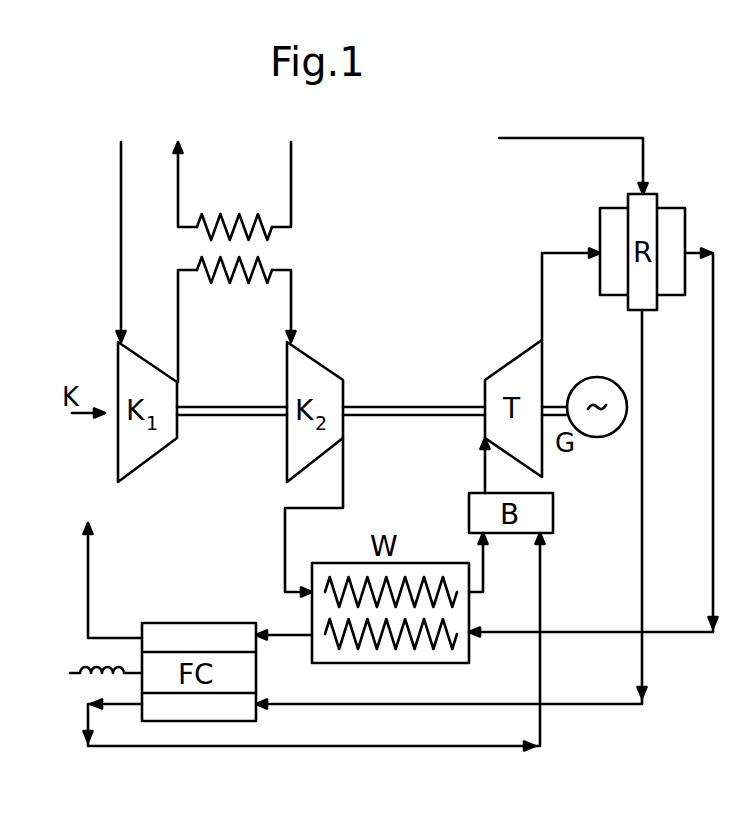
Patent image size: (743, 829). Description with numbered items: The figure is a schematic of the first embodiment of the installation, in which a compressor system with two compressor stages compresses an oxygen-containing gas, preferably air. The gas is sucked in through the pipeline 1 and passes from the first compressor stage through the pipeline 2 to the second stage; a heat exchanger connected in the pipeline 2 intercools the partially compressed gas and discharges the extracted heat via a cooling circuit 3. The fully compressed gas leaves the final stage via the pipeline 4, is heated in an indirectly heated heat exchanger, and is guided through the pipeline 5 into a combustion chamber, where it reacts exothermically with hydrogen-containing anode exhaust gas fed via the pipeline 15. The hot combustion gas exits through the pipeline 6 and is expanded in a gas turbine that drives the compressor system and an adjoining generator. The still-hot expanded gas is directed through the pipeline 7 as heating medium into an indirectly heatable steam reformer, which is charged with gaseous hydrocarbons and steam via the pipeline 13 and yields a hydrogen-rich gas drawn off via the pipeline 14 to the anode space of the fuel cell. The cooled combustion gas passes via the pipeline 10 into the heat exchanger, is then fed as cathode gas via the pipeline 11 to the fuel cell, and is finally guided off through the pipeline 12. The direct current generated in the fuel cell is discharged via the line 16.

The pipeline 1 is at (113, 242).
The pipeline 2 is at (237, 319).
The cooling circuit 3 is at (244, 191).
The pipeline 4 is at (302, 517).
The pipeline 5 is at (488, 566).
The pipeline 6 is at (475, 467).
The pipeline 7 is at (558, 295).
The pipeline 10 is at (595, 443).
The pipeline 11 is at (284, 652).
The pipeline 12 is at (113, 580).
The pipeline 13 is at (573, 166).
The pipeline 14 is at (451, 509).
The pipeline 15 is at (314, 660).
The line 16 is at (101, 691).